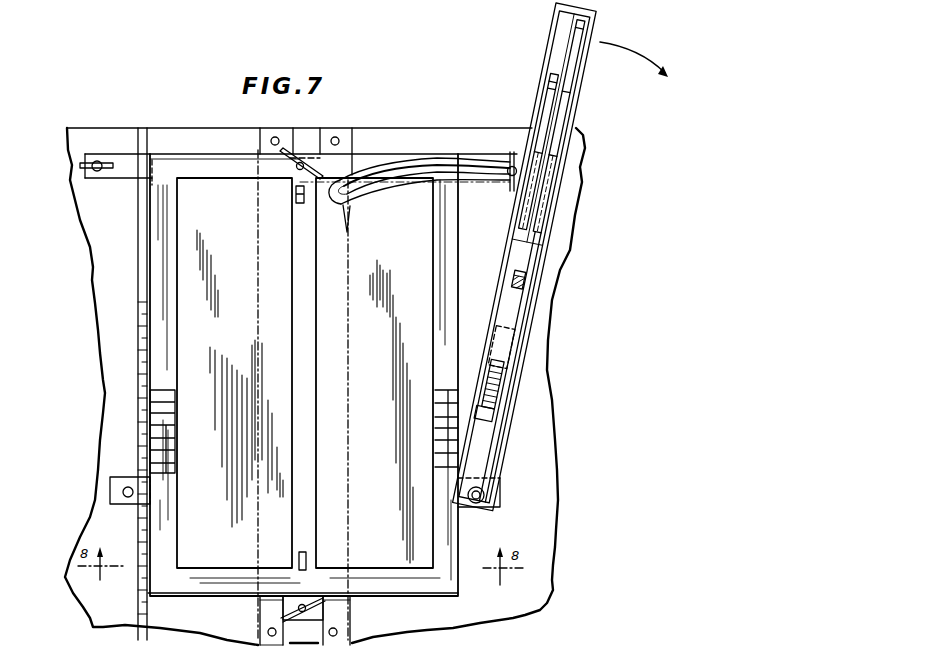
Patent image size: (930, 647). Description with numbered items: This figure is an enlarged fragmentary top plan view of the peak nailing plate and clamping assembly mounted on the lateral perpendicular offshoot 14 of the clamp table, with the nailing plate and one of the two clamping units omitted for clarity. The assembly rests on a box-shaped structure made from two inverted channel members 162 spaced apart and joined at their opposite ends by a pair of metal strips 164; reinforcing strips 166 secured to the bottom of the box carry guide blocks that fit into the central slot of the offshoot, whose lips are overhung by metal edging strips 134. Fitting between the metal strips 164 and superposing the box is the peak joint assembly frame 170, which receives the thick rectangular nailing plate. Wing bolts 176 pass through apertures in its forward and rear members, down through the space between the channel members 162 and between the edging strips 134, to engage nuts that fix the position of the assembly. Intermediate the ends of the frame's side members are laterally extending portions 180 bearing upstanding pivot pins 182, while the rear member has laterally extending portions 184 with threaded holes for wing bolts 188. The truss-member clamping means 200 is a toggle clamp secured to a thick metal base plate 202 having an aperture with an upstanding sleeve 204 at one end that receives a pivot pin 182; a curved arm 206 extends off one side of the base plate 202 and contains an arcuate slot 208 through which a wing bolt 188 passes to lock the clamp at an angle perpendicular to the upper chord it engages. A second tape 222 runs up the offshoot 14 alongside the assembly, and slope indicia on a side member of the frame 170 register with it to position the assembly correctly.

The lateral perpendicular offshoot 14 is at (430, 146).
The metal edging strips 134 is at (268, 617).
The inverted channel members 162 is at (237, 341).
The metal strips 164 is at (240, 160).
The reinforcing strips 166 is at (298, 197).
The peak joint assembly frame 170 is at (222, 166).
The wing bolts 176 is at (298, 165).
The laterally extending portions 180 is at (283, 644).
The pivot pins 182 is at (124, 493).
The laterally extending portions 184 is at (124, 162).
The wing bolts 188 is at (103, 173).
The truss-member clamping means 200 is at (560, 224).
The base plate 202 is at (528, 308).
The sleeve 204 is at (482, 488).
The curved arm 206 is at (347, 218).
The arcuate slot 208 is at (403, 182).
The second tape 222 is at (140, 397).